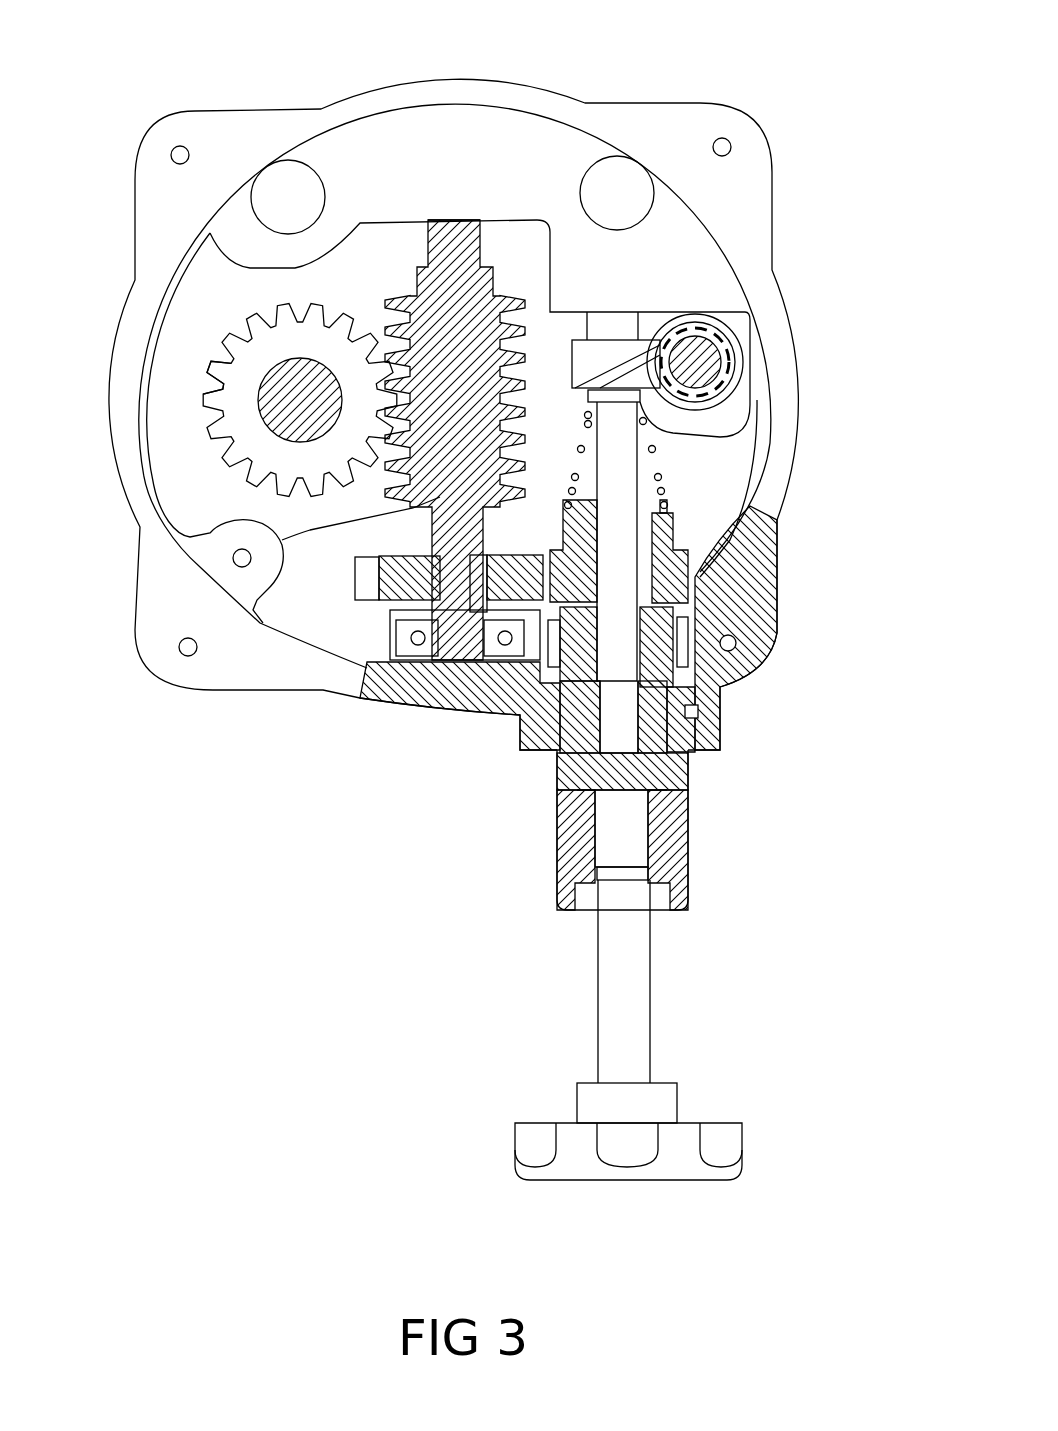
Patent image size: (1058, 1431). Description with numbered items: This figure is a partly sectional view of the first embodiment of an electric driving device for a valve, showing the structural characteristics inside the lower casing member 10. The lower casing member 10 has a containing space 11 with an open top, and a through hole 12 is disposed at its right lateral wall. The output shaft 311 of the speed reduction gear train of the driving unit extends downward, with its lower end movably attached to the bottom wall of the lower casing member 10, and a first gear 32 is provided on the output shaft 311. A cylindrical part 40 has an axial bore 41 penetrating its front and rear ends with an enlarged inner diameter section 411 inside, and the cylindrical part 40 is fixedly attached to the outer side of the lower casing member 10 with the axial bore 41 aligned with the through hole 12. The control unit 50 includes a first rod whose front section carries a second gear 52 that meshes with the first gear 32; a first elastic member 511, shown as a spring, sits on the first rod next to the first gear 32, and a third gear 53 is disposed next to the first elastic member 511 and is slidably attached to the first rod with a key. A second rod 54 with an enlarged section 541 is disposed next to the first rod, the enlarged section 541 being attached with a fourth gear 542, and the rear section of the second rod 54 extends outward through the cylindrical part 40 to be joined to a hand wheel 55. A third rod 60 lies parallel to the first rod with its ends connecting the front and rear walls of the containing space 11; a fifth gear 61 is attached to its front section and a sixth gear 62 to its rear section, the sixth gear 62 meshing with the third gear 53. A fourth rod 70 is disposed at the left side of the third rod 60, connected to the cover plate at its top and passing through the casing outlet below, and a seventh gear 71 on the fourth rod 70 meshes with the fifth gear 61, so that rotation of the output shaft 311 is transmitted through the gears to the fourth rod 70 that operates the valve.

The lower casing member 10 is at (302, 92).
The containing space 11 is at (178, 472).
The through hole 12 is at (758, 613).
The output shaft 311 is at (727, 357).
The first gear 32 is at (730, 385).
The cylindrical part 40 is at (700, 875).
The axial bore 41 is at (655, 825).
The enlarged inner diameter section 411 is at (685, 768).
The control unit 50 is at (645, 490).
The first elastic member 511 is at (665, 462).
The second gear 52 is at (610, 343).
The third gear 53 is at (700, 560).
The second rod 54 is at (615, 978).
The enlarged section 541 is at (560, 745).
The fourth gear 542 is at (735, 688).
The hand wheel 55 is at (730, 1145).
The third rod 60 is at (425, 503).
The fifth gear 61 is at (553, 195).
The sixth gear 62 is at (373, 592).
The fourth rod 70 is at (270, 392).
The seventh gear 71 is at (200, 372).